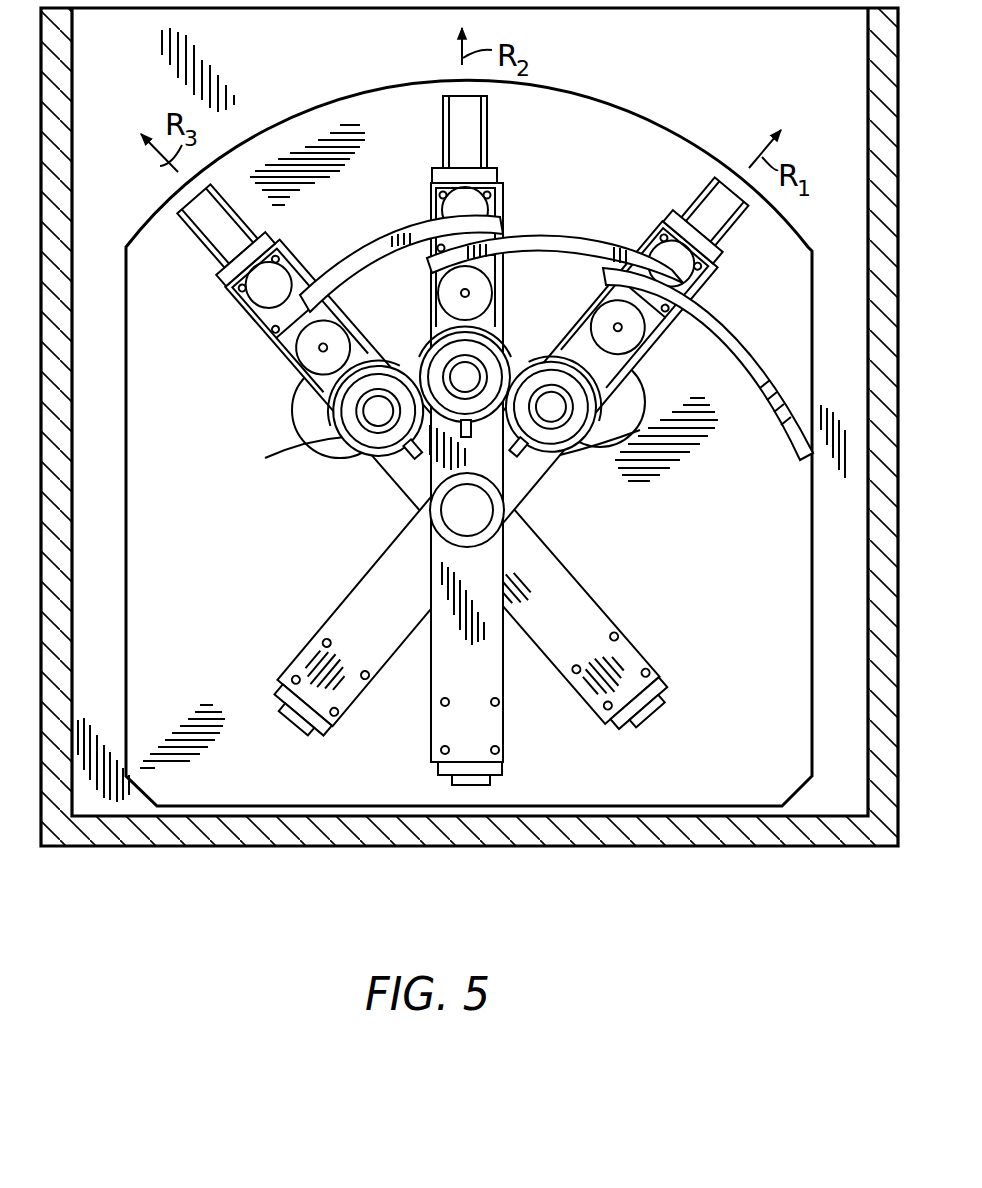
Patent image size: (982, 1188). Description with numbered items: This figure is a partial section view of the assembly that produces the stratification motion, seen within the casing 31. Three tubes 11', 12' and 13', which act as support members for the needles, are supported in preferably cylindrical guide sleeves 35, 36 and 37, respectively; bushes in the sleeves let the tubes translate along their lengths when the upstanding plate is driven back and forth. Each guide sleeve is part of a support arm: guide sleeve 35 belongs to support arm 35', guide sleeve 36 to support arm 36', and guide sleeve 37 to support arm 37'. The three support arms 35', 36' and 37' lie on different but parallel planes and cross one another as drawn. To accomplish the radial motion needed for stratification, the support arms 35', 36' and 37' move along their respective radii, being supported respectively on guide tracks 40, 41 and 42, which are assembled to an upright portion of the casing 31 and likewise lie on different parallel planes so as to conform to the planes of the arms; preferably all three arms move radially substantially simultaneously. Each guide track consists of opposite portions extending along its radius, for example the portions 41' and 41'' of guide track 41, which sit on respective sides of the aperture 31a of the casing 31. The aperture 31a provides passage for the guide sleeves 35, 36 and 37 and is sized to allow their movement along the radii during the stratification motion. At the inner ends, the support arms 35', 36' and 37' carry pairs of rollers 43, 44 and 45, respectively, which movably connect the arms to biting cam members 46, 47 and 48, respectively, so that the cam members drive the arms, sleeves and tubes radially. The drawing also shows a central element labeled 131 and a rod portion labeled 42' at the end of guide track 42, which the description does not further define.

The casing 31 is at (705, 790).
The aperture 31a is at (305, 397).
The guide sleeve 35 is at (551, 430).
The support arm 35' is at (495, 478).
The guide sleeve 36 is at (482, 384).
The support arm 36' is at (445, 472).
The guide sleeve 37 is at (364, 431).
The support arm 37' is at (455, 484).
The guide track 40 is at (744, 228).
The guide track 41 is at (503, 250).
The guide track portion 41' is at (509, 132).
The guide track portion 41'' is at (515, 761).
The guide track 42 is at (308, 289).
The left piston rod 42' is at (196, 238).
The pair of rollers 43 is at (673, 333).
The pair of rollers 44 is at (514, 266).
The pair of rollers 45 is at (244, 326).
The biting cam member 46 is at (753, 358).
The biting cam member 47 is at (568, 240).
The biting cam member 48 is at (380, 238).
The tube 11' is at (597, 407).
The tube 12' is at (430, 332).
The tube 13' is at (312, 443).
The central pivot roller 131 is at (470, 513).